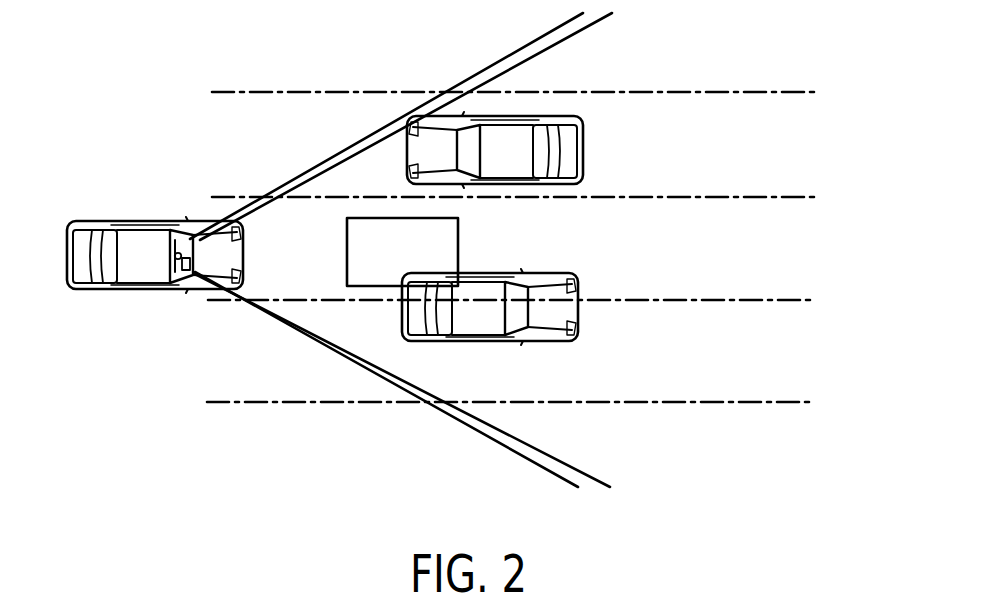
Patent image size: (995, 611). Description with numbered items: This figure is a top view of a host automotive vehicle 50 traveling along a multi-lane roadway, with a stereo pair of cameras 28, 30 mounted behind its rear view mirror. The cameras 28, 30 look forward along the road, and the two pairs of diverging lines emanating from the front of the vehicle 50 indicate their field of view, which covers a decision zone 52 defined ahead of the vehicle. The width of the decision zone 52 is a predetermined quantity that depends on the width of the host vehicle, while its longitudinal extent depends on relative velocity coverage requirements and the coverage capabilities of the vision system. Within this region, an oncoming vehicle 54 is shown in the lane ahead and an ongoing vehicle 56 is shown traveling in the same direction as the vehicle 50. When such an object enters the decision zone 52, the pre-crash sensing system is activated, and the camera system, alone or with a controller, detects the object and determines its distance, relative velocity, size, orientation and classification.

The camera 28 is at (177, 217).
The camera 30 is at (172, 288).
The vehicle 50 is at (130, 290).
The decision zone 52 is at (458, 248).
The oncoming vehicle 54 is at (583, 152).
The ongoing vehicle 56 is at (580, 282).